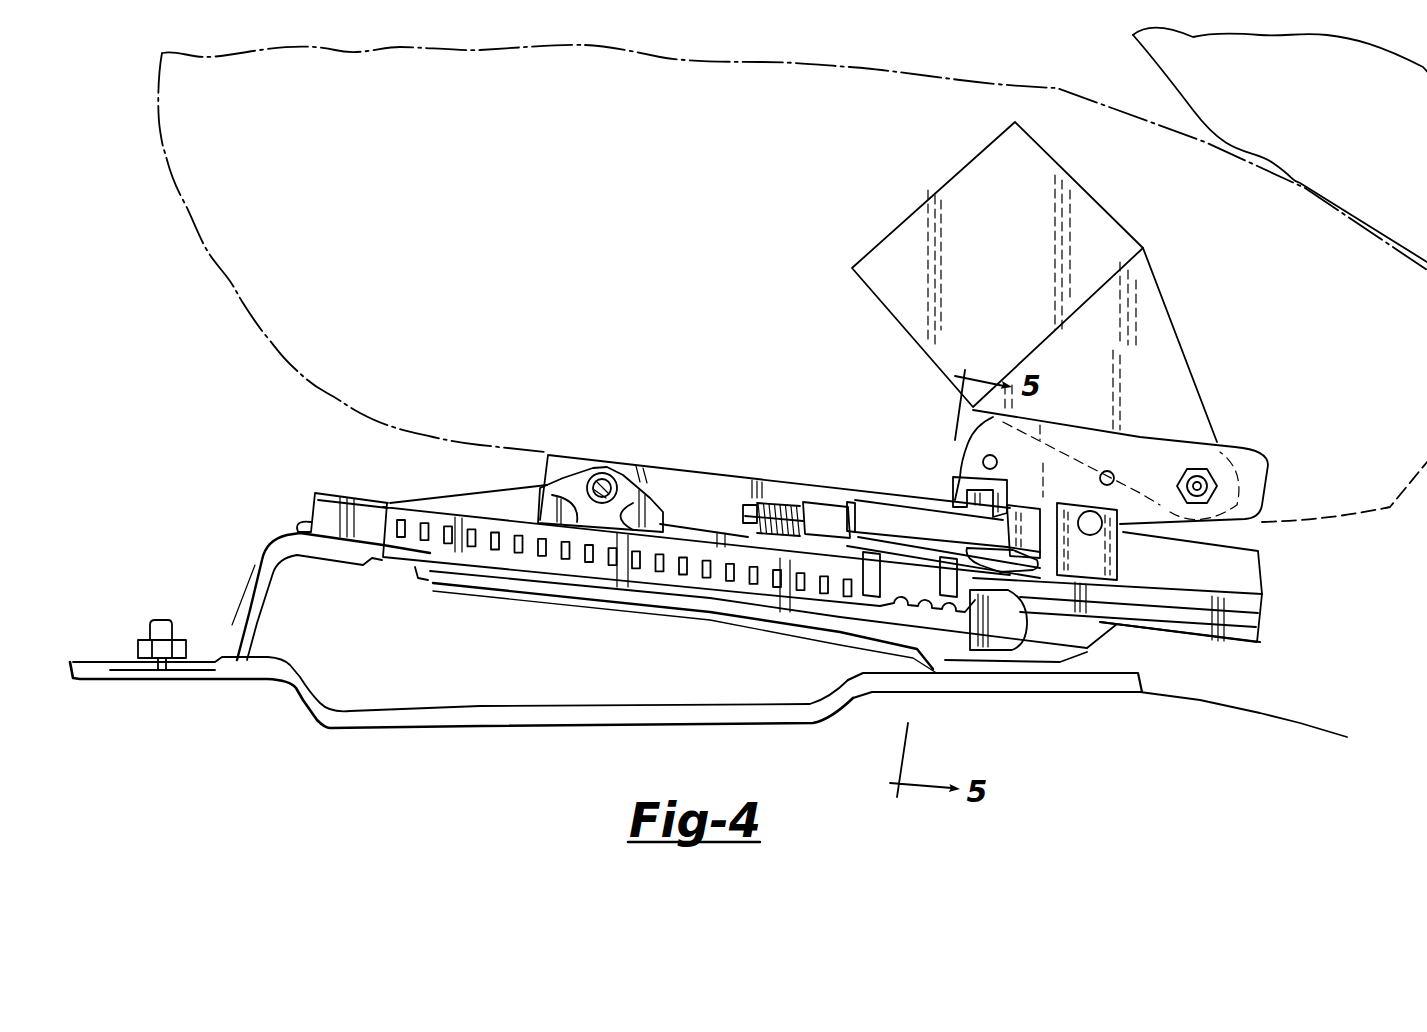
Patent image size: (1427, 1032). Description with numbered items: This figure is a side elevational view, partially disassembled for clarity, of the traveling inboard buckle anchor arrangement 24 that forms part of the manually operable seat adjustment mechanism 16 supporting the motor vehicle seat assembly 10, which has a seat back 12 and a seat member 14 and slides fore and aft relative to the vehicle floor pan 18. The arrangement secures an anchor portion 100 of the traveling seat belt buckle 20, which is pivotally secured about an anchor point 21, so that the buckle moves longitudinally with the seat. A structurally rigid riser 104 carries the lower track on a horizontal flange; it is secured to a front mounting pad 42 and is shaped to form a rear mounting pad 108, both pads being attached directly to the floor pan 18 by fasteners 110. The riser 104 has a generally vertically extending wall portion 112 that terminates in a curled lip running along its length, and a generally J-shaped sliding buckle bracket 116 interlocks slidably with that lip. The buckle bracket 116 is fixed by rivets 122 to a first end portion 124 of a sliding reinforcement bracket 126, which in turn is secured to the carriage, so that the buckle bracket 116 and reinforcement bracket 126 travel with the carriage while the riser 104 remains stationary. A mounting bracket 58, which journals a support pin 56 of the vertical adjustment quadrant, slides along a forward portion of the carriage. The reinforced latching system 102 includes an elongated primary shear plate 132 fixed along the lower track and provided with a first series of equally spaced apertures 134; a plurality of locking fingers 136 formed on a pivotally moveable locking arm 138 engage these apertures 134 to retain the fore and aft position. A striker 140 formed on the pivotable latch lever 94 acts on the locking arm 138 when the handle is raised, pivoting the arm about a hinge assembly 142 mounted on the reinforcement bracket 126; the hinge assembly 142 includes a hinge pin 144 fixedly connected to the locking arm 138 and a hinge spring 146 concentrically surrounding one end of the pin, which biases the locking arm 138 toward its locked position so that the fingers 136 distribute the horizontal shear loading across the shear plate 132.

The seat assembly 10 is at (265, 385).
The seat back 12 is at (1190, 53).
The seat member 14 is at (672, 113).
The seat adjustment mechanism 16 is at (333, 470).
The floor pan 18 is at (370, 747).
The seat belt buckle 20 is at (1088, 178).
The anchor point 21 is at (1197, 482).
The traveling inboard buckle anchor arrangement 24 is at (878, 480).
The front mounting pad 42 is at (125, 655).
The support pin 56 is at (627, 473).
The mounting bracket 58 is at (573, 468).
The latch lever 94 is at (1023, 500).
The anchor portion 100 is at (1155, 337).
The reinforced latching system 102 is at (803, 492).
The riser 104 is at (677, 478).
The rear mounting pad 108 is at (1050, 670).
The fasteners 110 is at (170, 658).
The vertically extending wall portion 112 is at (733, 478).
The buckle bracket 116 is at (1222, 523).
The rivets 122 is at (982, 460).
The first end portion 124 is at (1257, 492).
The sliding reinforcement bracket 126 is at (1223, 578).
The primary shear plate 132 is at (697, 585).
The apertures 134 is at (473, 540).
The locking fingers 136 is at (890, 597).
The locking arm 138 is at (1030, 592).
The striker 140 is at (1007, 490).
The hinge assembly 142 is at (845, 489).
The hinge pin 144 is at (920, 527).
The hinge spring 146 is at (767, 483).